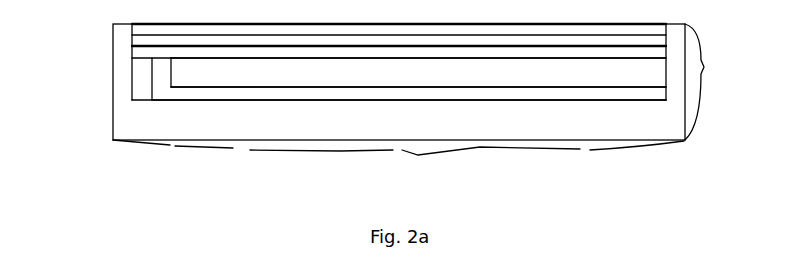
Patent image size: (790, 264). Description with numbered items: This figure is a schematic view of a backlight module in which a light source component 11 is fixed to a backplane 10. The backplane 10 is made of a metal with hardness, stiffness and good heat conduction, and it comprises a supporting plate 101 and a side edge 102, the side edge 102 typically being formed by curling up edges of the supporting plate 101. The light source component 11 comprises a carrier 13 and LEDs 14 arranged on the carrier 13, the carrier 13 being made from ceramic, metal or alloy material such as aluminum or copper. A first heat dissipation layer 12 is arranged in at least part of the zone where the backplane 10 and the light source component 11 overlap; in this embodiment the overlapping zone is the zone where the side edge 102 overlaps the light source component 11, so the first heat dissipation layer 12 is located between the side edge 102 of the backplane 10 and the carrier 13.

The backplane 10 is at (132, 130).
The light source component 11 is at (349, 123).
The first heat dissipation layer 12 is at (138, 93).
The carrier 13 is at (163, 90).
The LEDs 14 is at (183, 76).
The supporting plate 101 is at (398, 159).
The side edge 102 is at (718, 82).